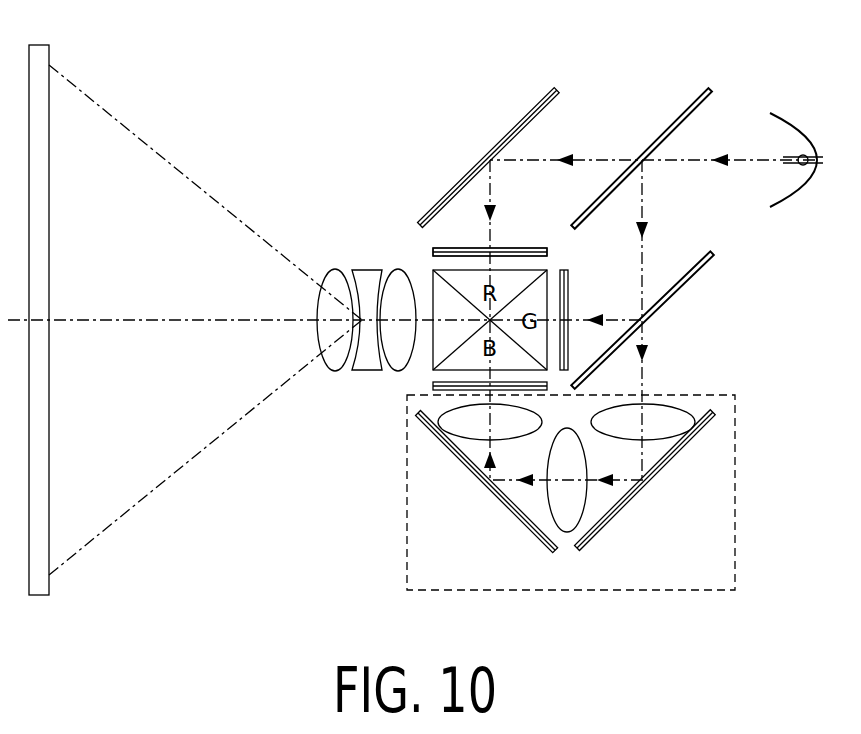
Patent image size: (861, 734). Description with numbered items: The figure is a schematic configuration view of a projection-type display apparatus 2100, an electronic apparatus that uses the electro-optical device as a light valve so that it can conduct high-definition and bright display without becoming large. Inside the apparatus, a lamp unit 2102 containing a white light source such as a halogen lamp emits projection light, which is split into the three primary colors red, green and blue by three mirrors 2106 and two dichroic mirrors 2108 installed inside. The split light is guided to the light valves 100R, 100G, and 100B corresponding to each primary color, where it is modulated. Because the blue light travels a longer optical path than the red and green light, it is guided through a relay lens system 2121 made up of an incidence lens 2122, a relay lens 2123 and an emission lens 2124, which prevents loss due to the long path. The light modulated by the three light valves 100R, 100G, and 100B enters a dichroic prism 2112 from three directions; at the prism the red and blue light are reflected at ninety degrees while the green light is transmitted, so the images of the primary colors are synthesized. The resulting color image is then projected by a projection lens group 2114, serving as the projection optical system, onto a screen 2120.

The projection-type display apparatus 2100 is at (582, 58).
The lamp unit 2102 is at (800, 152).
The mirror 2106 is at (525, 118).
The dichroic mirror 2108 is at (678, 118).
The dichroic prism 2112 is at (445, 249).
The projection lens group 2114 is at (418, 258).
The screen 2120 is at (49, 586).
The relay lens system 2121 is at (735, 440).
The incidence lens 2122 is at (670, 435).
The relay lens 2123 is at (580, 505).
The emission lens 2124 is at (465, 430).
The light valve 100R is at (465, 248).
The light valve 100G is at (570, 290).
The light valve 100B is at (430, 385).